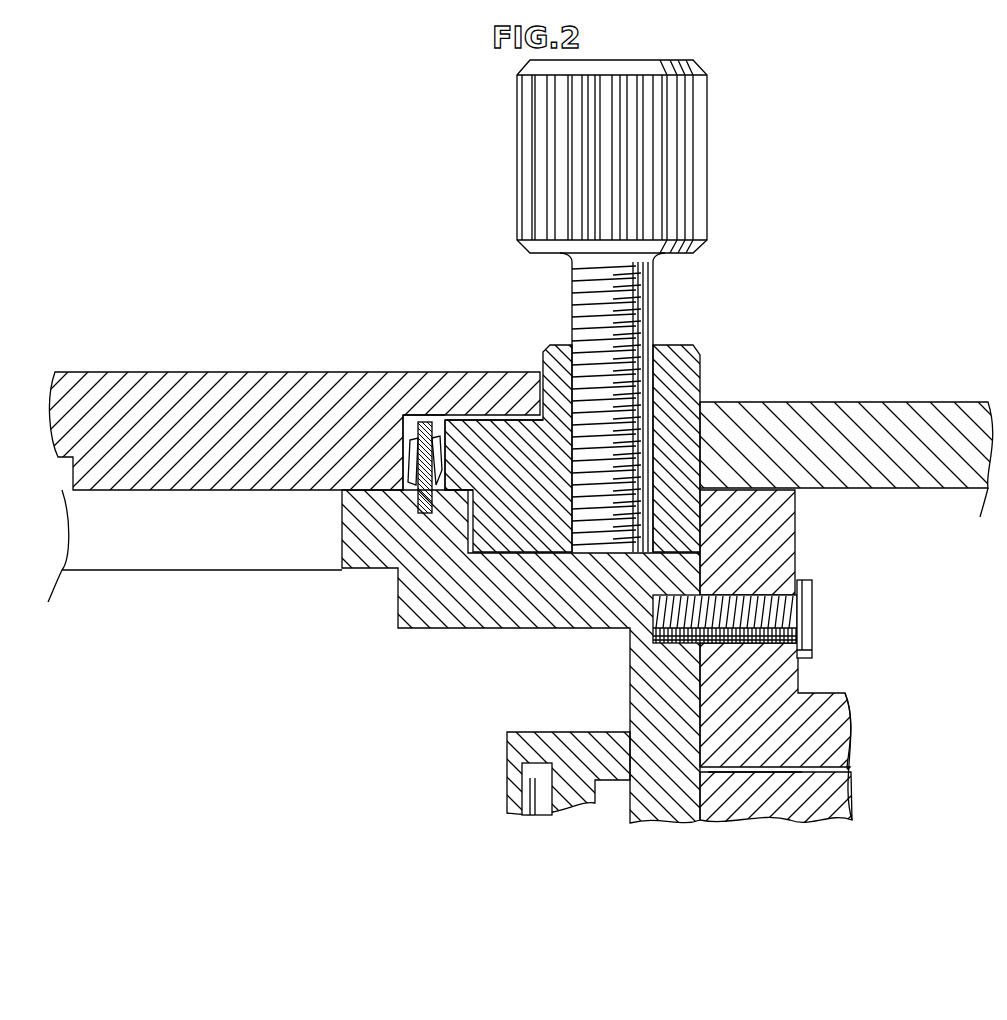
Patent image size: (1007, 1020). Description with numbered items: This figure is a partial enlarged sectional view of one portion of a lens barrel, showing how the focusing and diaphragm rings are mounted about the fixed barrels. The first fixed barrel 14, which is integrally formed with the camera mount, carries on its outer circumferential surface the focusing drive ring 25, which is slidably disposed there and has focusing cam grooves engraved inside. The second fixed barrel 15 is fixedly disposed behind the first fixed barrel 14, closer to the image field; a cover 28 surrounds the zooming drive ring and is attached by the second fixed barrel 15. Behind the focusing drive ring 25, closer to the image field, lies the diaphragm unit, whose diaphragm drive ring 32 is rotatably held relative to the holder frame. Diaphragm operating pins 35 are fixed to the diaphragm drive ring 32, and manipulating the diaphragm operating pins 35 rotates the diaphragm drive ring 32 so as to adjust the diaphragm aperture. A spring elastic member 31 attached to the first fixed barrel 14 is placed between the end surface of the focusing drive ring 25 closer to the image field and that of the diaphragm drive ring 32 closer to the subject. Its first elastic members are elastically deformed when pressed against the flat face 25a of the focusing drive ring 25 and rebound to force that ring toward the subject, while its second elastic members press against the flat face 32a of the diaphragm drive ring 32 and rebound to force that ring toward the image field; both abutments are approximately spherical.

The first fixed barrel 14 is at (487, 598).
The second fixed barrel 15 is at (832, 737).
The focusing drive ring 25 is at (188, 400).
The flat face 25a is at (410, 417).
The cover 28 is at (832, 420).
The spring elastic member 31 is at (427, 427).
The diaphragm drive ring 32 is at (683, 348).
The flat face 32a is at (463, 423).
The diaphragm operating pin 35 is at (707, 140).